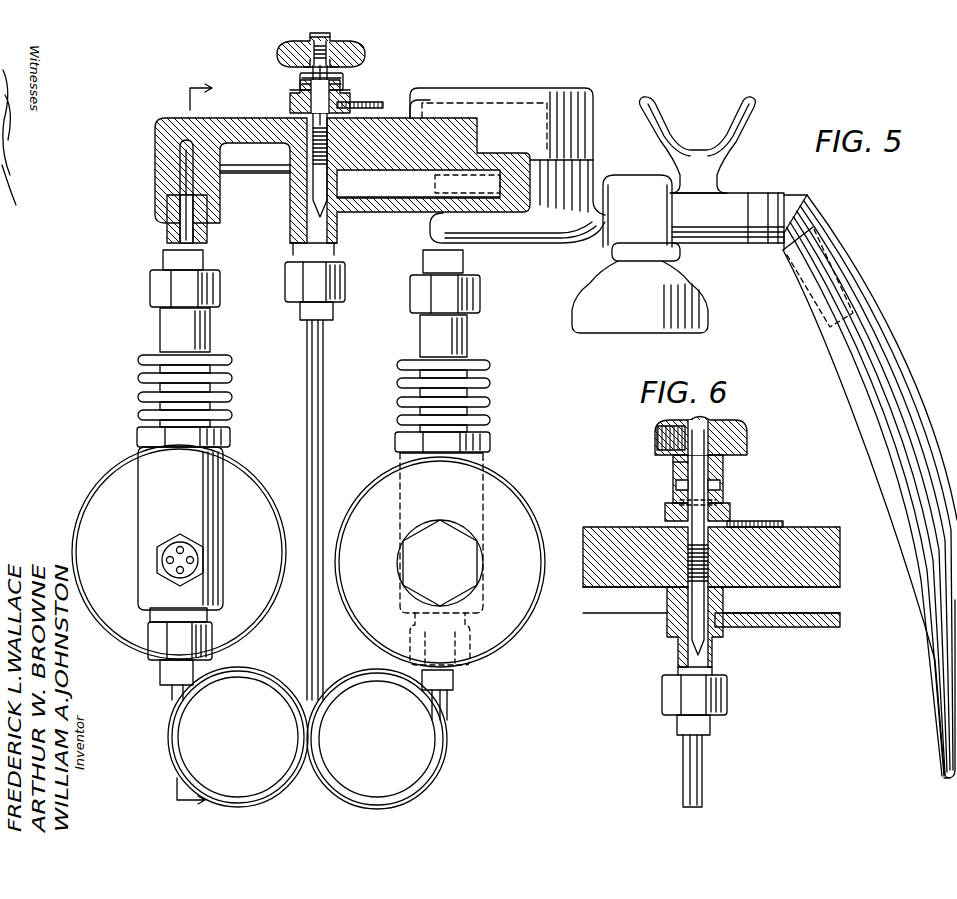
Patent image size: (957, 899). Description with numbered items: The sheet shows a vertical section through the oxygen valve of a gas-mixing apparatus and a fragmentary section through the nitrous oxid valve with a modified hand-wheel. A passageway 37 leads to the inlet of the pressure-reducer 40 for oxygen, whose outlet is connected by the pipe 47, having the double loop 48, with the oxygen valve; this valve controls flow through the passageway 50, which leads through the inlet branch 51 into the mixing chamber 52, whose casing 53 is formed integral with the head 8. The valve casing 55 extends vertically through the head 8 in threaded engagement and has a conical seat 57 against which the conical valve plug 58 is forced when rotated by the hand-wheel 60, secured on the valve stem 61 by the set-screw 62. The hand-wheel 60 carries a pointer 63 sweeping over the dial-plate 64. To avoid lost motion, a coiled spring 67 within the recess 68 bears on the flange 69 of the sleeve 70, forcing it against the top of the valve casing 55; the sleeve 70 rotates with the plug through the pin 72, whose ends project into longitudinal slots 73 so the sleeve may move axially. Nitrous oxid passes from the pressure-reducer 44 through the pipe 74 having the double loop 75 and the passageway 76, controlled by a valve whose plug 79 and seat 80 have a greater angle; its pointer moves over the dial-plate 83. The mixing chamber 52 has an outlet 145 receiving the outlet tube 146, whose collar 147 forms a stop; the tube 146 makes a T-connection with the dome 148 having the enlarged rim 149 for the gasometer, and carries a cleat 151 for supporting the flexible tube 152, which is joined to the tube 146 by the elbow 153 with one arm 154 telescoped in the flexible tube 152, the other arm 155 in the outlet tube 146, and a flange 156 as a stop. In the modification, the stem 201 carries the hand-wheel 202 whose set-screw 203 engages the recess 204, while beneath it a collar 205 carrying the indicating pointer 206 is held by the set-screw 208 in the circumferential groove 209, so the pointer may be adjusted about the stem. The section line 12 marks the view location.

In FIG. 5, the head 8 is at (285, 117).
In FIG. 6, the head 8 is at (840, 568).
In FIG. 5, the section line 12 is at (172, 447).
In FIG. 5, the passageway 37 is at (155, 175).
In FIG. 5, the pressure-reducer 40 is at (179, 475).
In FIG. 5, the pressure-reducer 44 is at (440, 458).
In FIG. 5, the pipe 47 is at (307, 447).
In FIG. 5, the double loop 48 is at (235, 798).
In FIG. 5, the passageway 50 is at (392, 205).
In FIG. 5, the inlet branch 51 is at (497, 183).
In FIG. 5, the mixing chamber 52 is at (592, 152).
In FIG. 5, the casing 53 is at (523, 110).
In FIG. 5, the valve casing 55 is at (291, 183).
In FIG. 5, the conical seat 57 is at (330, 198).
In FIG. 5, the conical valve plug 58 is at (291, 204).
In FIG. 5, the hand-wheel 60 is at (362, 52).
In FIG. 5, the valve stem 61 is at (312, 78).
In FIG. 5, the set-screw 62 is at (290, 50).
In FIG. 5, the pointer 63 is at (356, 110).
In FIG. 5, the dial-plate 64 is at (403, 112).
In FIG. 5, the coiled spring 67 is at (305, 92).
In FIG. 5, the recess 68 is at (338, 82).
In FIG. 5, the flange 69 is at (298, 108).
In FIG. 5, the sleeve 70 is at (378, 83).
In FIG. 5, the pin 72 is at (255, 156).
In FIG. 5, the longitudinal slots 73 is at (300, 87).
In FIG. 5, the pipe 74 is at (447, 703).
In FIG. 6, the pipe 74 is at (690, 762).
In FIG. 5, the double loop 75 is at (367, 800).
In FIG. 6, the passageway 76 is at (840, 600).
In FIG. 6, the valve plug 79 is at (668, 620).
In FIG. 6, the seat 80 is at (723, 630).
In FIG. 6, the dial-plate 83 is at (782, 522).
In FIG. 5, the outlet 145 is at (528, 245).
In FIG. 5, the outlet tube 146 is at (702, 232).
In FIG. 5, the collar 147 is at (607, 184).
In FIG. 5, the dome 148 is at (640, 297).
In FIG. 5, the enlarged rim 149 is at (575, 320).
In FIG. 5, the cleat 151 is at (695, 158).
In FIG. 5, the flexible tube 152 is at (940, 693).
In FIG. 5, the elbow 153 is at (808, 197).
In FIG. 5, the arm 154 is at (816, 236).
In FIG. 5, the arm 155 is at (749, 194).
In FIG. 5, the flange 156 is at (771, 193).
In FIG. 6, the stem 201 is at (724, 463).
In FIG. 6, the hand-wheel 202 is at (745, 441).
In FIG. 6, the set-screw 203 is at (665, 437).
In FIG. 6, the recess 204 is at (676, 461).
In FIG. 6, the collar 205 is at (722, 488).
In FIG. 6, the indicating pointer 206 is at (731, 512).
In FIG. 6, the set-screw 208 is at (678, 486).
In FIG. 6, the groove 209 is at (688, 505).